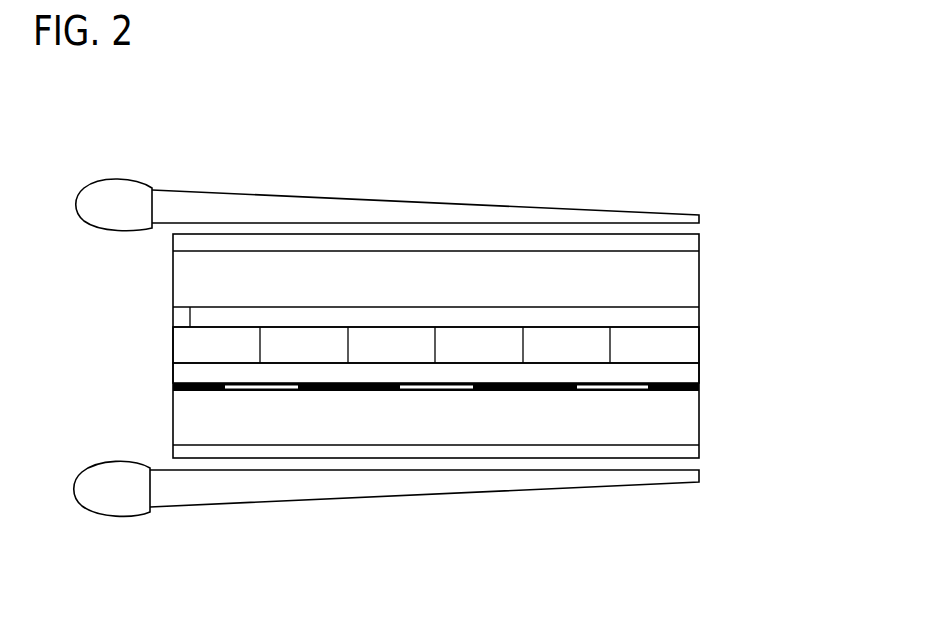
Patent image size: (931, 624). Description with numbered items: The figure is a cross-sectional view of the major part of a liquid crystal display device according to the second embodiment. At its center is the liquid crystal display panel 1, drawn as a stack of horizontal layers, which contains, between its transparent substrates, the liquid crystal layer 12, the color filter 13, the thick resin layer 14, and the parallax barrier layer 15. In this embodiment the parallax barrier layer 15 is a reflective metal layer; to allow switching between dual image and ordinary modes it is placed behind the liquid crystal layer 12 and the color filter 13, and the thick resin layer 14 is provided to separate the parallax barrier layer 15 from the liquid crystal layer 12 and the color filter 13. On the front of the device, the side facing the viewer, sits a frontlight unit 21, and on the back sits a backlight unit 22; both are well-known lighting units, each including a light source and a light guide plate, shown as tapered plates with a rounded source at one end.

The liquid crystal display panel 1 is at (497, 348).
The liquid crystal layer 12 is at (672, 319).
The color filter 13 is at (685, 352).
The thick resin layer 14 is at (688, 372).
The parallax barrier layer 15 is at (697, 387).
The frontlight unit 21 is at (673, 218).
The backlight unit 22 is at (682, 482).